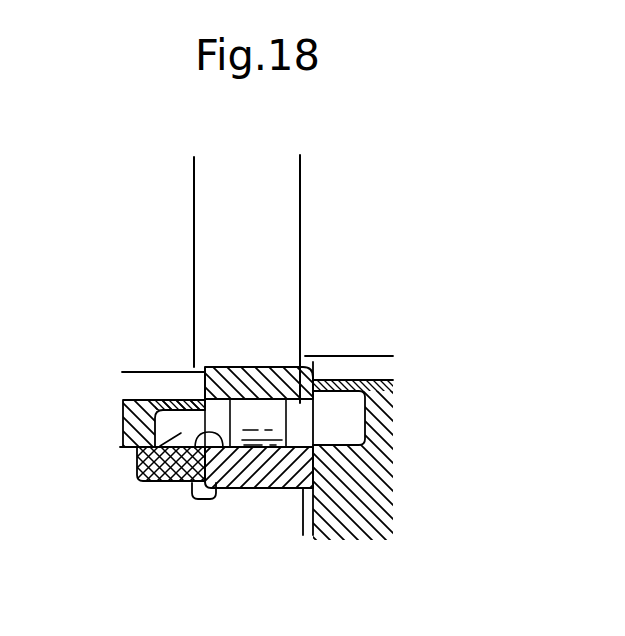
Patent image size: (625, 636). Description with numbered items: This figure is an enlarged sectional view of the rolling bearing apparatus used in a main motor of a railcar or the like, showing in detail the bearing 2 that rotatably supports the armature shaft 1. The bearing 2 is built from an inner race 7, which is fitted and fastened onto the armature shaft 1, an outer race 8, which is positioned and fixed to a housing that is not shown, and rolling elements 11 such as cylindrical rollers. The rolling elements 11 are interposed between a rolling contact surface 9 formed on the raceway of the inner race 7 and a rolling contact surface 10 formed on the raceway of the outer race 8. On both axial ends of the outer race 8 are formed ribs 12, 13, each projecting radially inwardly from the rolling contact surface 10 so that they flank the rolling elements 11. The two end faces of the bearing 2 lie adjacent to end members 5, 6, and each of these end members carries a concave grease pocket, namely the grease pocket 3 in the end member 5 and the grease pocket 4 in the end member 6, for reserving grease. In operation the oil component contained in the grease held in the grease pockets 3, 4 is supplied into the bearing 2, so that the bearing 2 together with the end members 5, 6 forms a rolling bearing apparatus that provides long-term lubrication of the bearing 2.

The armature shaft 1 is at (165, 210).
The bearing 2 is at (227, 492).
The grease pocket 3 is at (137, 482).
The grease pocket 4 is at (345, 421).
The end member 5 is at (134, 393).
The end member 6 is at (394, 477).
The inner race 7 is at (313, 364).
The outer race 8 is at (245, 490).
The rolling contact surface 9 is at (247, 404).
The rolling contact surface 10 is at (273, 450).
The rolling element 11 is at (279, 399).
The rib 12 is at (182, 482).
The rib 13 is at (300, 447).